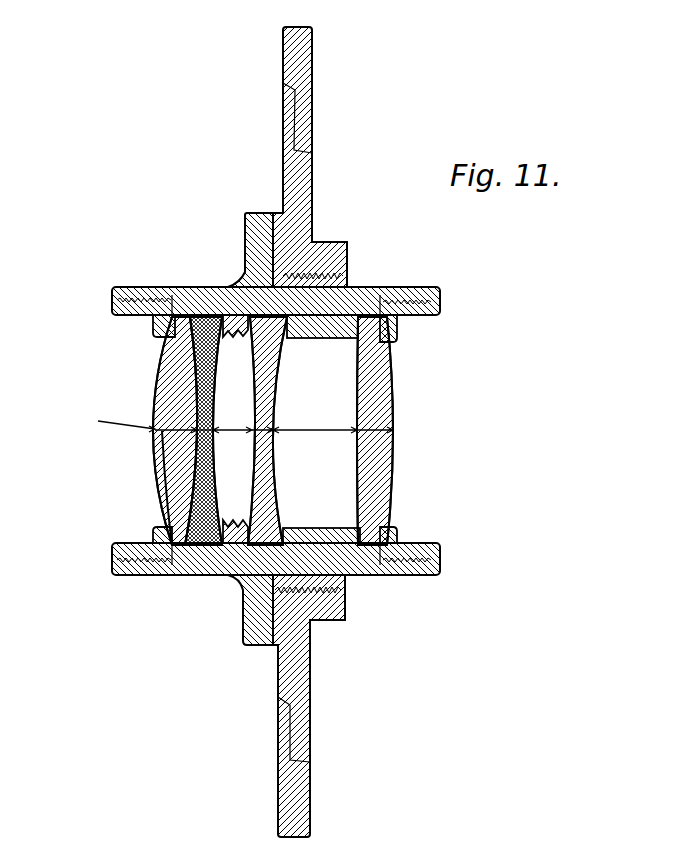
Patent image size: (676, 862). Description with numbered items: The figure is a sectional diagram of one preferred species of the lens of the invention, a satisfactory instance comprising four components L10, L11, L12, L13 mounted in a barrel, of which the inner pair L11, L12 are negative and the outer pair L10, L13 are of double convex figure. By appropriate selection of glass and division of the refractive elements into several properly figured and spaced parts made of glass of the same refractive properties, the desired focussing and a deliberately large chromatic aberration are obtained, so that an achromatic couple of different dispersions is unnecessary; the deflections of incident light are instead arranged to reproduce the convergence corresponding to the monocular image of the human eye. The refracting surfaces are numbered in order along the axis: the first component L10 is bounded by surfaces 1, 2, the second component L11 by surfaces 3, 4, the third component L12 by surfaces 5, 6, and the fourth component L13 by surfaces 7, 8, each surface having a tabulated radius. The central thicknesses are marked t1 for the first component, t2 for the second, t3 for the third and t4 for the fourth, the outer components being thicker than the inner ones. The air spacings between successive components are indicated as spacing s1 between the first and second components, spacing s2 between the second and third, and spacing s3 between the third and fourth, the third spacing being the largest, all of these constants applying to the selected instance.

The first lens surface 1 is at (159, 370).
The second lens surface 2 is at (163, 392).
The third lens surface 3 is at (161, 456).
The fourth lens surface 4 is at (166, 491).
The fifth lens surface 5 is at (252, 503).
The sixth lens surface 6 is at (272, 476).
The seventh lens surface 7 is at (357, 506).
The eighth lens surface 8 is at (393, 494).
The first lens component L10 is at (167, 510).
The second lens component L11 is at (167, 523).
The third lens component L12 is at (283, 355).
The fourth lens component L13 is at (393, 478).
The first spacing s1 is at (112, 418).
The second spacing s2 is at (231, 433).
The third spacing s3 is at (315, 430).
The central thickness of first component t1 is at (158, 440).
The central thickness of second component t2 is at (219, 407).
The central thickness of third component t3 is at (278, 412).
The central thickness of fourth component t4 is at (393, 418).